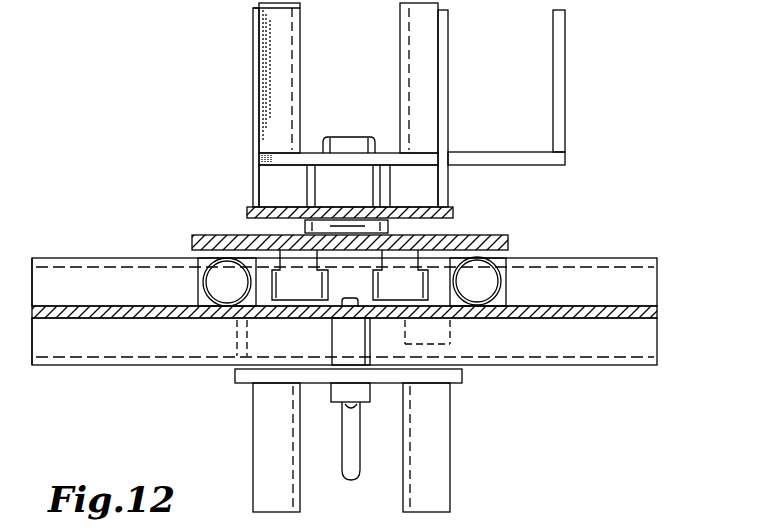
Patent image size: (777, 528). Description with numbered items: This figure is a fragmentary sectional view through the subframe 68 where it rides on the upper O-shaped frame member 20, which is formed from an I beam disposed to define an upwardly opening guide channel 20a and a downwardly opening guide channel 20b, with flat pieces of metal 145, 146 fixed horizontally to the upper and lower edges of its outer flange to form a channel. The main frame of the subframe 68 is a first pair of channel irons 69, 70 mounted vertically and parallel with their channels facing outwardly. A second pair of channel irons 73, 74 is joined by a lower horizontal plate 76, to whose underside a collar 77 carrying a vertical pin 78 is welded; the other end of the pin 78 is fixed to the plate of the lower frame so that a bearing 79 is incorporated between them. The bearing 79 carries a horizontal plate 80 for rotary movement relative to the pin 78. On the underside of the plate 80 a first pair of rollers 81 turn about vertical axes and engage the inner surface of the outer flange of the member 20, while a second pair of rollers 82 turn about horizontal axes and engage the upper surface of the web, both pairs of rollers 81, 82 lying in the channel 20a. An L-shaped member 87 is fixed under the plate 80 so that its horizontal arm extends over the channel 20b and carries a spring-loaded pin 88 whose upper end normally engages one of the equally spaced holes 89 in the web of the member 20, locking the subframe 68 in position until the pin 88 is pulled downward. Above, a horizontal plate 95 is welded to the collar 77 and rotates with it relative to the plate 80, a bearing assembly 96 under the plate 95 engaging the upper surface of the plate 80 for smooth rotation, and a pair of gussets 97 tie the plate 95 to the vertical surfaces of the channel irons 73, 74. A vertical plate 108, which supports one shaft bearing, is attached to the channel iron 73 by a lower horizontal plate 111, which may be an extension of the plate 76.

The upper O-shaped frame member 20 is at (372, 307).
The upwardly opening guide channel 20a is at (640, 277).
The downwardly opening guide channel 20b is at (638, 336).
The subframe 68 is at (250, 136).
The channel iron 69 is at (450, 447).
The channel iron 70 is at (255, 450).
The channel iron 73 is at (409, 46).
The channel iron 74 is at (275, 49).
The lower horizontal plate 76 is at (263, 160).
The collar 77 is at (310, 186).
The vertical pin 78 is at (342, 145).
The bearing 79 is at (405, 222).
The horizontal plate 80 is at (200, 236).
The first pair of rollers 81 is at (270, 272).
The second pair of rollers 82 is at (205, 270).
The L-shaped member 87 is at (235, 376).
The pin 88 is at (350, 483).
The holes 89 is at (138, 308).
The horizontal plate 95 is at (452, 209).
The bearing assembly 96 is at (345, 220).
The gussets 97 is at (253, 90).
The vertical plate 108 is at (565, 110).
The lower horizontal plate 111 is at (494, 153).
The flat piece of metal 145 is at (88, 258).
The flat piece of metal 146 is at (105, 367).